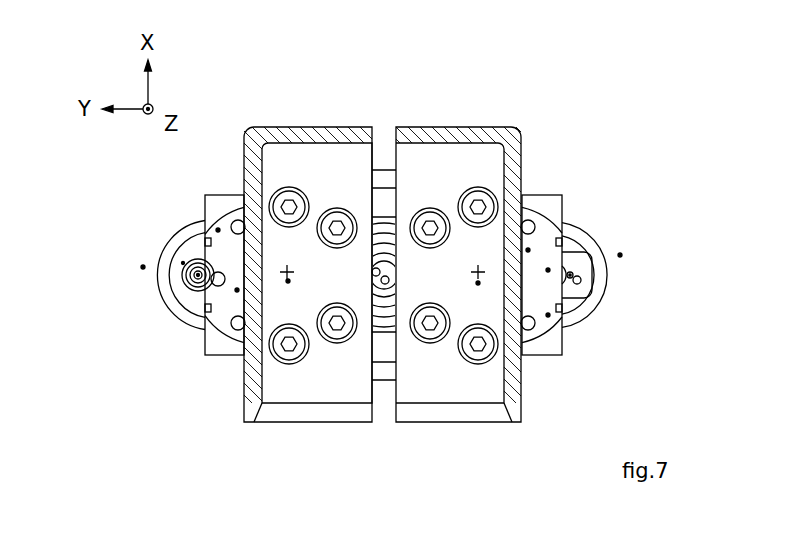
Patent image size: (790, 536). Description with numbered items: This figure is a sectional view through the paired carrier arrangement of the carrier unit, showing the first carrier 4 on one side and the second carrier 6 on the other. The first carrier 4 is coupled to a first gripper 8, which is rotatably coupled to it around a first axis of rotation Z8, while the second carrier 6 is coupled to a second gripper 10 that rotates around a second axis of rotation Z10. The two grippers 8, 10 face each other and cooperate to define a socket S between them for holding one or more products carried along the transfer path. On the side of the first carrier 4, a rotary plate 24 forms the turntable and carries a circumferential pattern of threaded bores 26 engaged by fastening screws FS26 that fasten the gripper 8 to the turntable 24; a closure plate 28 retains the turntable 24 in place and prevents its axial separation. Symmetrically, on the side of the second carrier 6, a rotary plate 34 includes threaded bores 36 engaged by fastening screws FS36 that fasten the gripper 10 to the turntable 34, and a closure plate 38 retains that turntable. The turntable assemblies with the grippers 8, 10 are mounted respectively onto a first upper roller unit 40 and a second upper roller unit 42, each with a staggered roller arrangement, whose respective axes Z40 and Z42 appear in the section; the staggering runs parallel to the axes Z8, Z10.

The first carrier 4 is at (181, 372).
The second carrier 6 is at (588, 372).
The first gripper 8 is at (289, 120).
The second gripper 10 is at (482, 120).
The rotary plate 24 is at (218, 230).
The threaded bores 26 is at (211, 281).
The closure plate 28 is at (237, 290).
The rotary plate 34 is at (548, 315).
The threaded bores 36 is at (548, 270).
The closure plate 38 is at (528, 250).
The first upper roller unit 40 is at (143, 267).
The second upper roller unit 42 is at (620, 255).
The fastening screws FS26 is at (337, 323).
The fastening screws FS36 is at (478, 344).
The socket S is at (411, 407).
The first axis of rotation Z8 is at (288, 281).
The second axis of rotation Z10 is at (478, 283).
The axis of first roller unit Z40 is at (183, 263).
The axis of second roller unit Z42 is at (581, 278).